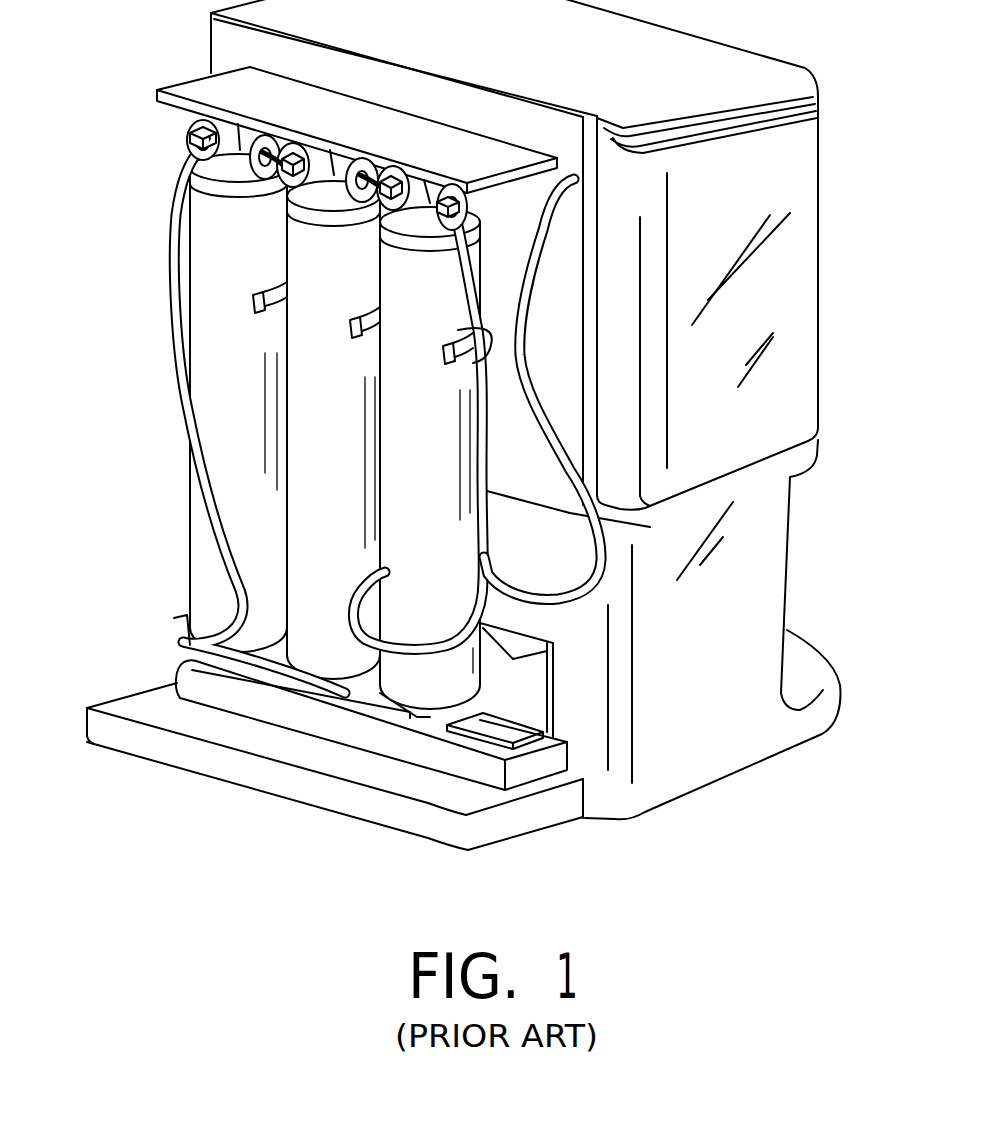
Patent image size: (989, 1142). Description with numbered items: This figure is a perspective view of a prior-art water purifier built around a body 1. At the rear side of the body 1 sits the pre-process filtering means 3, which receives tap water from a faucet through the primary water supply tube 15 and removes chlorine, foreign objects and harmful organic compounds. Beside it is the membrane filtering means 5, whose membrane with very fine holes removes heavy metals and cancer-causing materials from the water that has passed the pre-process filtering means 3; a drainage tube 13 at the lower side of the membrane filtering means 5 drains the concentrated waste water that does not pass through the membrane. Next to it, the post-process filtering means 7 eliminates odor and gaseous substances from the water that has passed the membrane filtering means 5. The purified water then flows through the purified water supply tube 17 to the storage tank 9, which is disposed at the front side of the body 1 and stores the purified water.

The body 1 is at (707, 758).
The pre-process filtering means 3 is at (207, 588).
The membrane filtering means 5 is at (350, 688).
The post-process filtering means 7 is at (443, 682).
The storage tank 9 is at (797, 317).
The drainage tube 13 is at (293, 688).
The primary water supply tube 15 is at (176, 318).
The purified water supply tube 17 is at (598, 549).